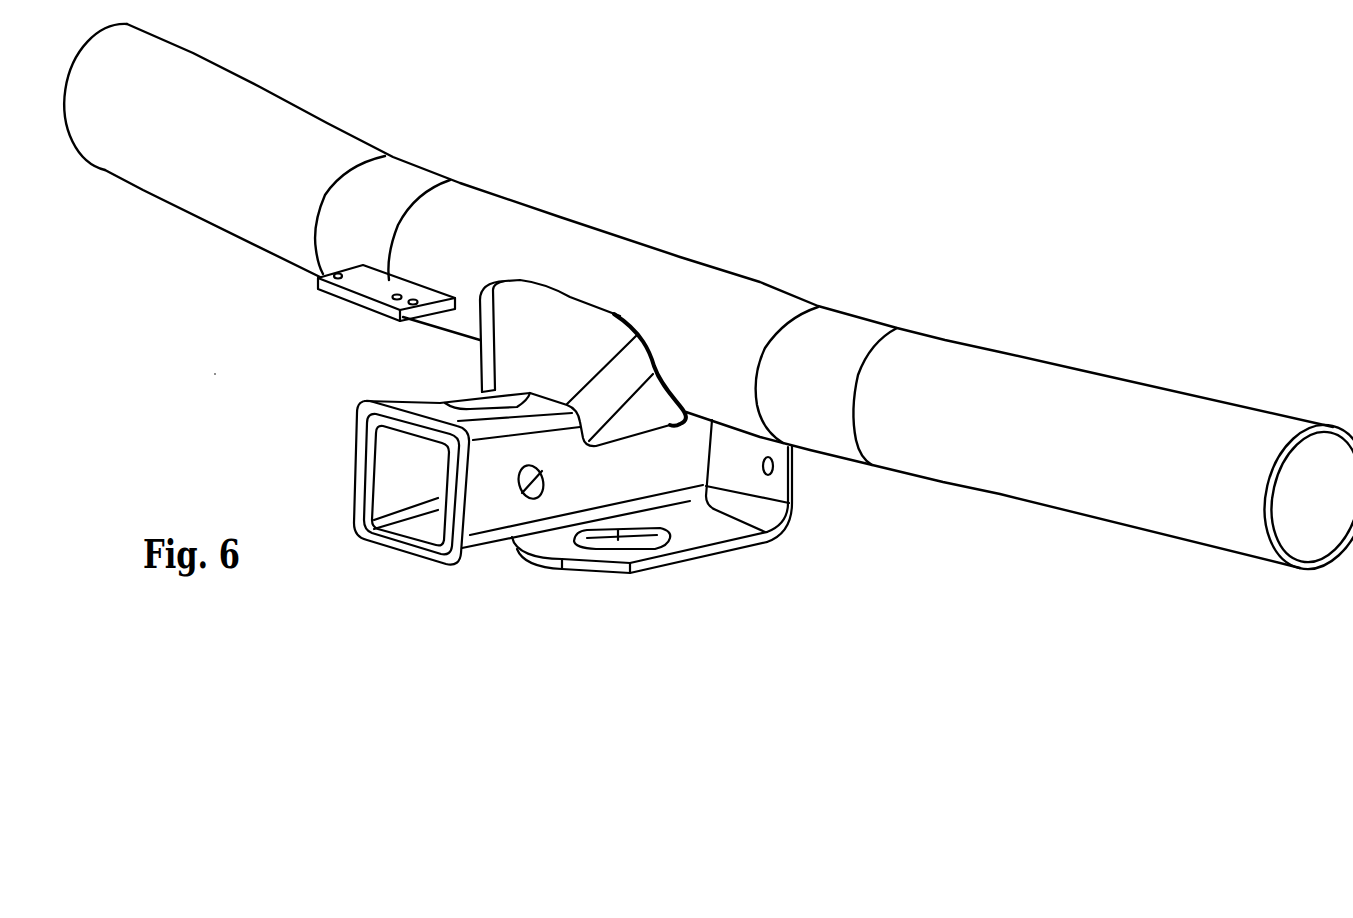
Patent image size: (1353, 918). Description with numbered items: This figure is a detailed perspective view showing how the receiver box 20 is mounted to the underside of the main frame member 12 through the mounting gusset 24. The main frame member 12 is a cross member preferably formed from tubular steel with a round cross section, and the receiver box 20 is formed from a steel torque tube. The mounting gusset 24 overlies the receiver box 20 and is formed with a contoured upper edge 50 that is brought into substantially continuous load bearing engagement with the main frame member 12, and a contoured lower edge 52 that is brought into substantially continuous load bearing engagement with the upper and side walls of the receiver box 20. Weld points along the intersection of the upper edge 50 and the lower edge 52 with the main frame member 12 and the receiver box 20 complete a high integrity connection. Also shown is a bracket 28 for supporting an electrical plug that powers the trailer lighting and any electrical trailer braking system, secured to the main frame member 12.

The main frame member 12 is at (760, 297).
The receiver box 20 is at (497, 512).
The mounting gusset 24 is at (605, 338).
The bracket 28 is at (345, 295).
The contoured upper edge 50 is at (567, 293).
The contoured lower edge 52 is at (433, 403).